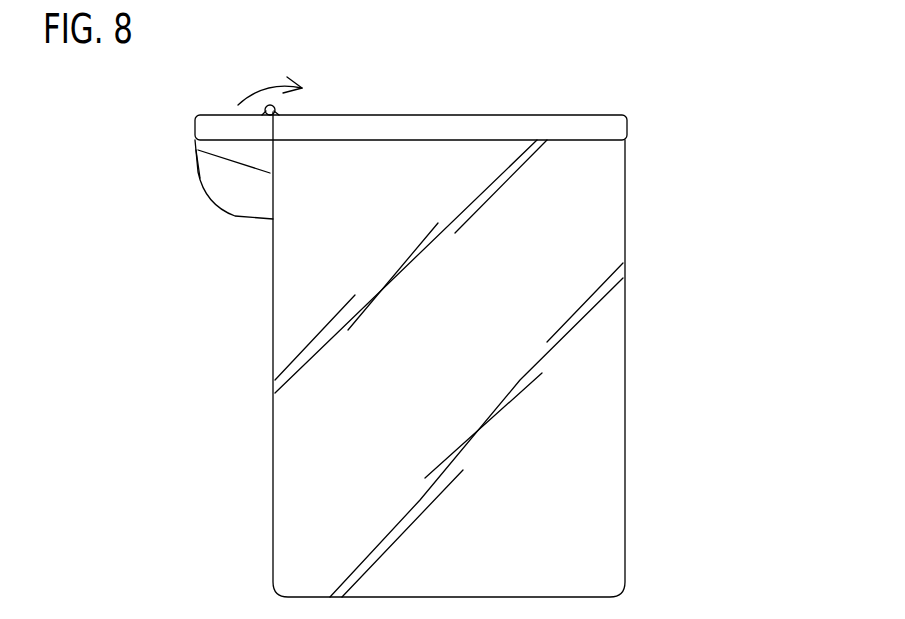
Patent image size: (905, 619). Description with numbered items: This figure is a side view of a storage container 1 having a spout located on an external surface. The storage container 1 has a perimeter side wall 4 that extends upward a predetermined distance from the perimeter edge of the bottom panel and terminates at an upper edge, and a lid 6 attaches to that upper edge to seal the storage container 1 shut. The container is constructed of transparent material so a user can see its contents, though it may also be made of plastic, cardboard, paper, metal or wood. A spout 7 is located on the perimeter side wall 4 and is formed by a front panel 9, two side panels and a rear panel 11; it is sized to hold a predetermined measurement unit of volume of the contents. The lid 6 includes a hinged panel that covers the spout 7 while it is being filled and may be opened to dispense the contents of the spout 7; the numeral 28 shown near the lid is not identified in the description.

The storage container 1 is at (690, 202).
The perimeter side wall 4 is at (462, 343).
The lid 6 is at (608, 132).
The spout 7 is at (233, 187).
The front panel 9 is at (200, 183).
The rear panel 11 is at (207, 167).
The hinge 28 is at (222, 127).